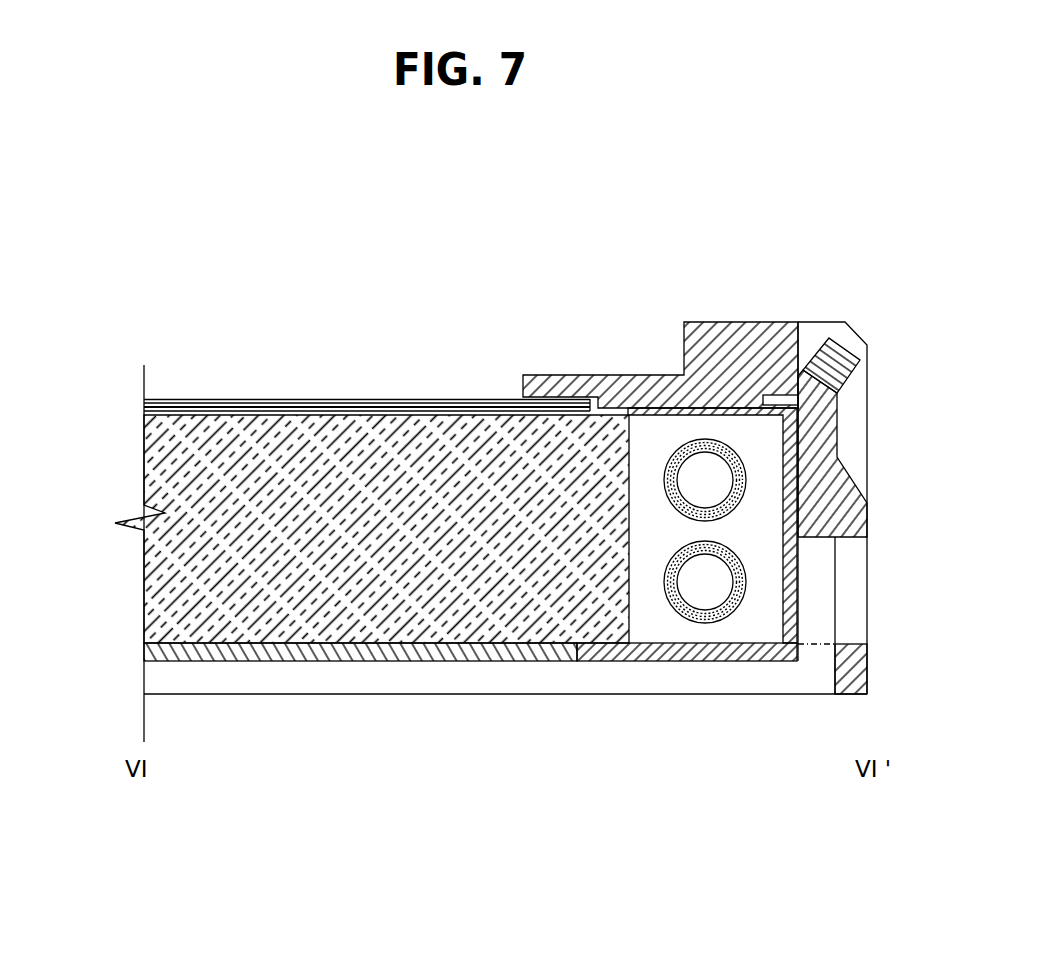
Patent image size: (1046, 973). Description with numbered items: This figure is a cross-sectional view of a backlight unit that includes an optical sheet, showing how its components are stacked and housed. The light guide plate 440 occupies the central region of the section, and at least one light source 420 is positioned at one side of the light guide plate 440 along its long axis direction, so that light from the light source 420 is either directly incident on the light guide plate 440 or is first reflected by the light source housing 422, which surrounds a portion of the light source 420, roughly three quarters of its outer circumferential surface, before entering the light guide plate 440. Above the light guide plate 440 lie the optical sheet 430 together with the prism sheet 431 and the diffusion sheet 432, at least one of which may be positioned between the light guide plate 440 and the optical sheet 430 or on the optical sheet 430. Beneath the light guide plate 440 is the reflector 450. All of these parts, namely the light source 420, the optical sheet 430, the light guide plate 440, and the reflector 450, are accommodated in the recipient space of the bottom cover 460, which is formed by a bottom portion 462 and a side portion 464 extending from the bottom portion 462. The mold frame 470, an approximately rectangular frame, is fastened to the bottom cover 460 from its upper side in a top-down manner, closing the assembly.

The light source 420 is at (688, 612).
The light source housing 422 is at (643, 648).
The optical sheet 430 is at (134, 398).
The prism sheet 431 is at (144, 404).
The diffusion sheet 432 is at (144, 412).
The light guide plate 440 is at (152, 577).
The reflector 450 is at (148, 649).
The bottom cover 460 is at (822, 773).
The bottom portion 462 is at (731, 683).
The side portion 464 is at (830, 485).
The mold frame 470 is at (732, 353).